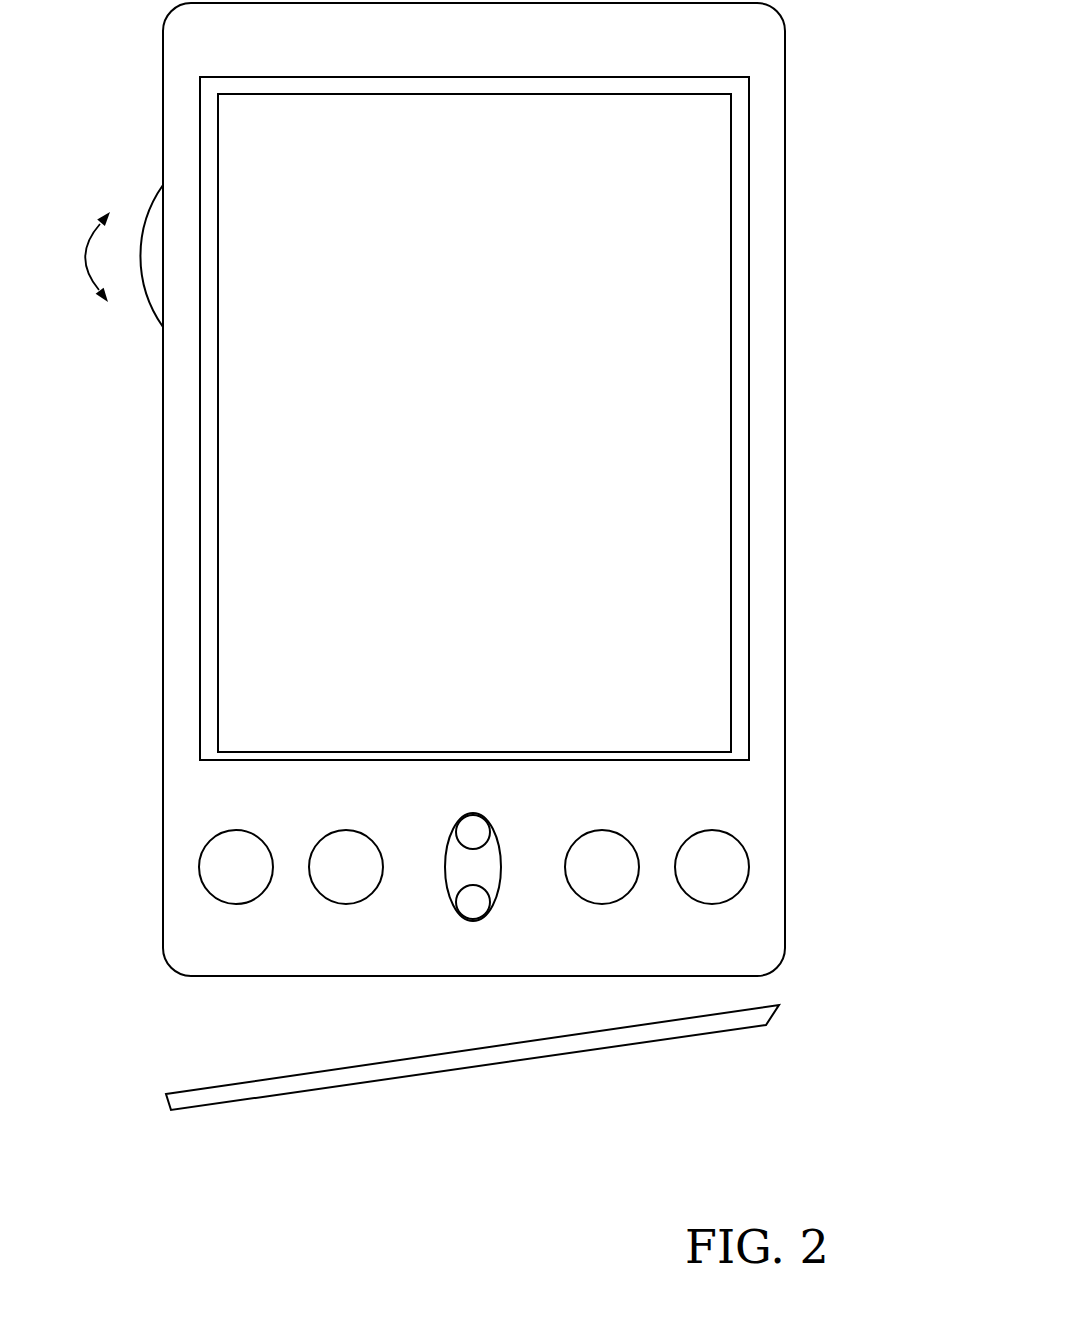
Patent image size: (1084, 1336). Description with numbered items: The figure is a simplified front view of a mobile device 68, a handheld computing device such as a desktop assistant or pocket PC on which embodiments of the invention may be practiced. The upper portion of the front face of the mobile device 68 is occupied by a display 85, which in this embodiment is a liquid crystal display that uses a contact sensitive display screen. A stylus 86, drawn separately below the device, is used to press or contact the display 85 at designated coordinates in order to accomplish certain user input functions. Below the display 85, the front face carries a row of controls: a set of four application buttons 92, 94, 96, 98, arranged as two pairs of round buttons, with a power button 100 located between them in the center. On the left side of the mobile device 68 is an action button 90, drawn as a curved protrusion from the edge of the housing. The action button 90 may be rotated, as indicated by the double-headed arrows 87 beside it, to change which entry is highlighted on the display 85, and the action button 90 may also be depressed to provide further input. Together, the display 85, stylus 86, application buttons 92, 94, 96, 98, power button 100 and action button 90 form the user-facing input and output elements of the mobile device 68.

The mobile device 68 is at (113, 106).
The display 85 is at (487, 538).
The stylus 86 is at (273, 1085).
The arrows 87 is at (92, 235).
The action button 90 is at (147, 293).
The application button 92 is at (217, 858).
The application button 94 is at (328, 885).
The application button 96 is at (633, 848).
The application button 98 is at (730, 885).
The power button 100 is at (473, 822).